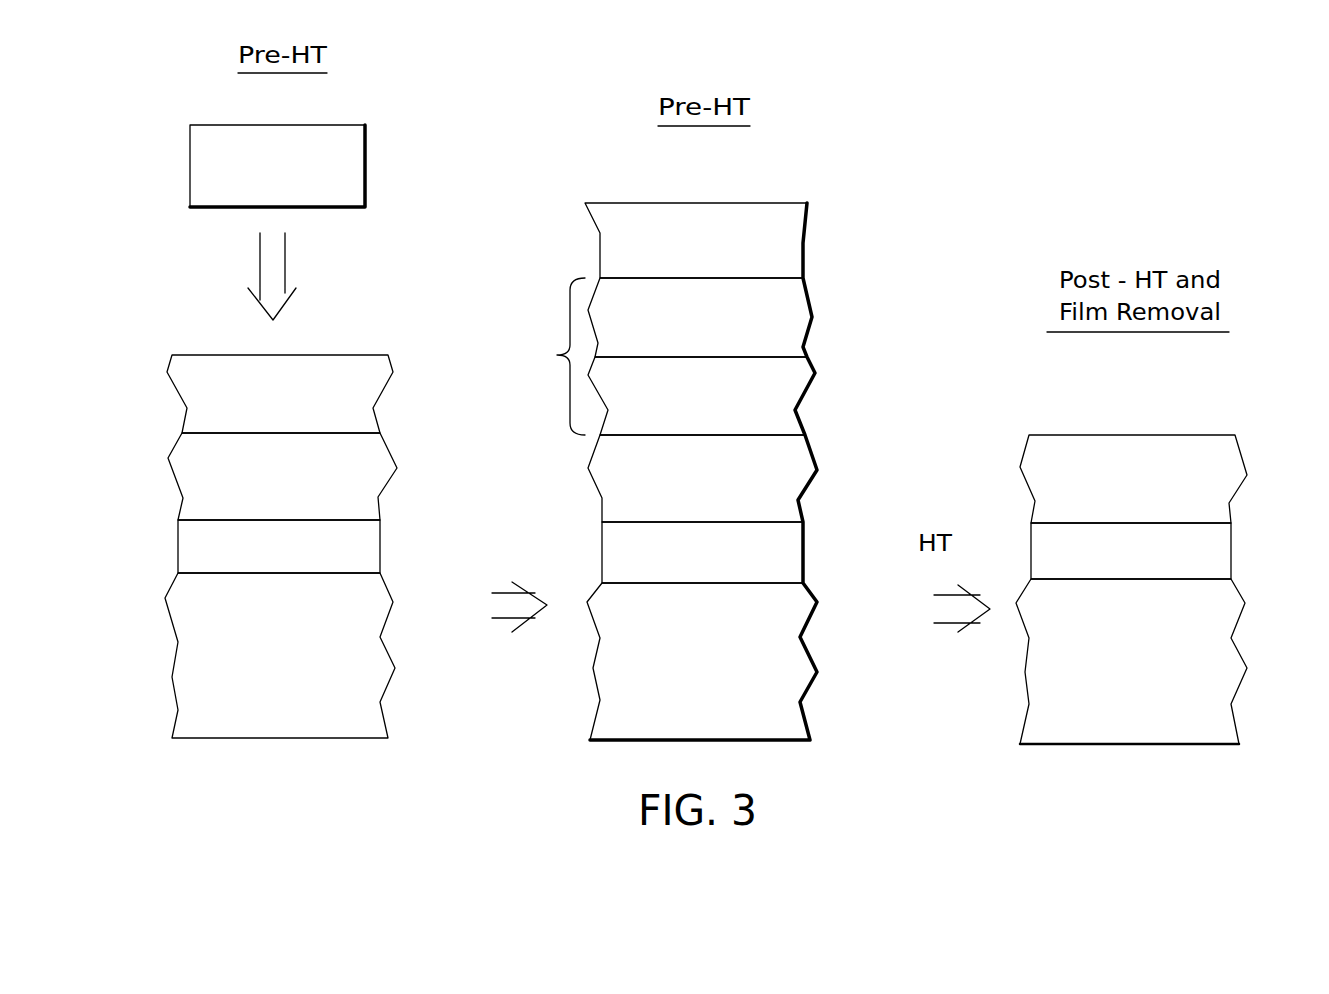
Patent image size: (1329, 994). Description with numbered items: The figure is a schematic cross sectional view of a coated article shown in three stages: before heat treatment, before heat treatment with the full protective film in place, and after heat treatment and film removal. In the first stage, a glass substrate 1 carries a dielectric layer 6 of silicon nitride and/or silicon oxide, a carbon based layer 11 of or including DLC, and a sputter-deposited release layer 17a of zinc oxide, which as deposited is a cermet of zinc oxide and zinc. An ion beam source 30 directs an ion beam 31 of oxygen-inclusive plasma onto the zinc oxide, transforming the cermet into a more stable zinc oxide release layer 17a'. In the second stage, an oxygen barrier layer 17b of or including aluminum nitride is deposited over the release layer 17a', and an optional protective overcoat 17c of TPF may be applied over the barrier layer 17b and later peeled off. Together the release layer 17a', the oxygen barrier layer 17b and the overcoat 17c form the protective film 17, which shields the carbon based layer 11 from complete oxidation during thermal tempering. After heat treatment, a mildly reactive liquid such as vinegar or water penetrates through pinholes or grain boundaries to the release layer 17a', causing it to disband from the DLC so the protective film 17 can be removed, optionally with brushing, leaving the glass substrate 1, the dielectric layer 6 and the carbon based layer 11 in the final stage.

The glass substrate 1 is at (377, 662).
The dielectric layer 6 is at (358, 545).
The carbon based layer 11 is at (377, 453).
The protective film 17 is at (555, 310).
The release layer 17a is at (325, 394).
The release layer 17a' is at (747, 396).
The oxygen barrier layer 17b is at (787, 308).
The protective overcoat 17c is at (785, 243).
The ion beam source 30 is at (350, 165).
The ion beam 31 is at (243, 252).